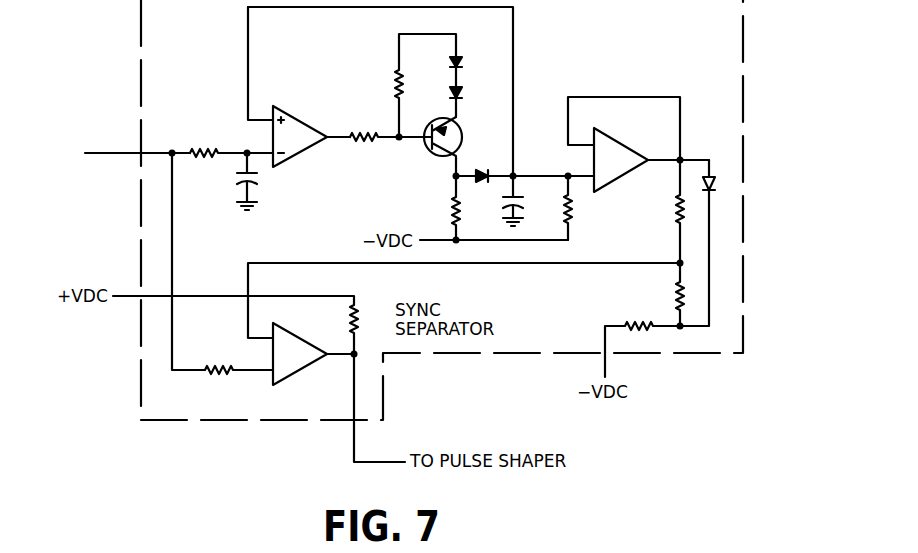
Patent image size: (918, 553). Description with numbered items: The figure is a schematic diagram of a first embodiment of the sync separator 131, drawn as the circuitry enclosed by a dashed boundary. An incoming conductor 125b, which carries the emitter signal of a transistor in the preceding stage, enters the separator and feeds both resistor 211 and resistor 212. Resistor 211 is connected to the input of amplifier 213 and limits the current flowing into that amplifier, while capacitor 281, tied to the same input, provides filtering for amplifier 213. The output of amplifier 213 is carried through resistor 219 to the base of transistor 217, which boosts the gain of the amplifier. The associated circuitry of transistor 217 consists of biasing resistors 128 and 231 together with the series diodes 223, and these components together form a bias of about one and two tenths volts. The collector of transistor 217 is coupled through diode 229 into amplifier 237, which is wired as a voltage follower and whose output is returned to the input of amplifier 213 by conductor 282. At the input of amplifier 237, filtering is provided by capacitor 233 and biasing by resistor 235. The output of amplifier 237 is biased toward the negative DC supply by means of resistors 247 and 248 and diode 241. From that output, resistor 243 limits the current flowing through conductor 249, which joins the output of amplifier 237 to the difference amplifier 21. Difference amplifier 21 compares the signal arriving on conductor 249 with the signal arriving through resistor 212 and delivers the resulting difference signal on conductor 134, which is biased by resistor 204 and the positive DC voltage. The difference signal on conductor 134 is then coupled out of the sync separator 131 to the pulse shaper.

The conductor 125b is at (110, 152).
The sync separator 131 is at (140, 396).
The resistor 211 is at (207, 150).
The amplifier 213 is at (298, 110).
The capacitor 281 is at (255, 181).
The resistor 219 is at (364, 142).
The biasing resistor 128 is at (397, 86).
The diodes 223 is at (459, 60).
The transistor 217 is at (455, 128).
The diode 229 is at (483, 172).
The conductor 282 is at (514, 35).
The biasing resistor 231 is at (452, 210).
The capacitor 233 is at (505, 200).
The resistor 235 is at (573, 206).
The amplifier 237 is at (616, 142).
The diode 241 is at (710, 172).
The resistor 243 is at (677, 205).
The resistor 248 is at (677, 293).
The resistor 247 is at (632, 322).
The conductor 249 is at (552, 264).
The resistor 204 is at (357, 312).
The resistor 212 is at (215, 366).
The difference amplifier 21 is at (291, 336).
The conductor 134 is at (353, 402).